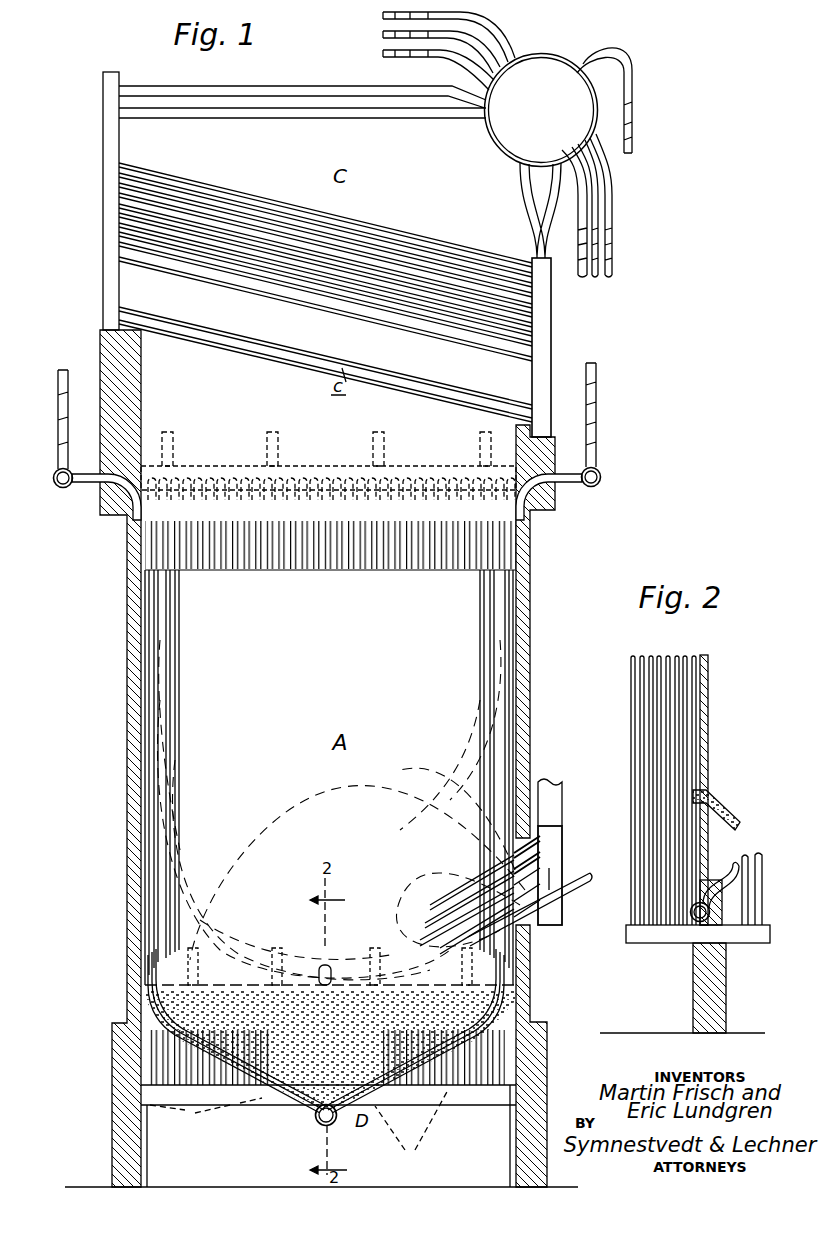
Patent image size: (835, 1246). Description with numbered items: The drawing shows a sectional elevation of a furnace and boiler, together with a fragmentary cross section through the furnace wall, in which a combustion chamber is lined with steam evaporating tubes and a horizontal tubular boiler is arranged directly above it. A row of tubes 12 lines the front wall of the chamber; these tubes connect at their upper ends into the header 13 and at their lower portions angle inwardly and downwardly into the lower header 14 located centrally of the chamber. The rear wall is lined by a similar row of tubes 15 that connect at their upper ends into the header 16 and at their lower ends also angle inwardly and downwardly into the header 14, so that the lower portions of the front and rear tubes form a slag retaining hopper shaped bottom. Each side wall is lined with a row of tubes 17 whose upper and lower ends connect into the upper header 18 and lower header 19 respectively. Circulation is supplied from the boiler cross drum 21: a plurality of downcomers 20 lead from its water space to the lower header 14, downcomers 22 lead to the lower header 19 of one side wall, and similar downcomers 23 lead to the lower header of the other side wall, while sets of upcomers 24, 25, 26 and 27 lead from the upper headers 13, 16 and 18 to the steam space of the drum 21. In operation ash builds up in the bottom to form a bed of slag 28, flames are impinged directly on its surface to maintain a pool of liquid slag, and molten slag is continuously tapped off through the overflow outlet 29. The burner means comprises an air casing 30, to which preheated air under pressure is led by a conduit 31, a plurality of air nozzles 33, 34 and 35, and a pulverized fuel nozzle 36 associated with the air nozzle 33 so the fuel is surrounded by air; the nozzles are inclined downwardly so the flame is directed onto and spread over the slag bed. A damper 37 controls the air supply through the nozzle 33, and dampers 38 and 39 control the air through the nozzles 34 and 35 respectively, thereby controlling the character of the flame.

In FIG. 1, the row of tubes 12 is at (518, 655).
In FIG. 1, the header 13 is at (601, 474).
In FIG. 1, the lower header 14 is at (318, 1121).
In FIG. 2, the lower header 14 is at (659, 950).
In FIG. 1, the row of tubes 15 is at (145, 660).
In FIG. 2, the row of tubes 15 is at (633, 750).
In FIG. 1, the header 16 is at (84, 495).
In FIG. 1, the row of tubes 17 is at (337, 572).
In FIG. 2, the row of tubes 17 is at (700, 775).
In FIG. 1, the upper header 18 is at (335, 470).
In FIG. 1, the lower header 19 is at (420, 1098).
In FIG. 2, the lower header 19 is at (708, 930).
In FIG. 1, the downcomers 20 is at (612, 216).
In FIG. 2, the downcomers 20 is at (768, 882).
In FIG. 1, the boiler cross drum 21 is at (553, 58).
In FIG. 1, the downcomers 22 is at (600, 208).
In FIG. 2, the downcomers 22 is at (723, 880).
In FIG. 1, the downcomers 23 is at (580, 219).
In FIG. 1, the upcomers 24 is at (635, 101).
In FIG. 1, the upcomers 25 is at (383, 53).
In FIG. 1, the upcomers 26 is at (383, 34).
In FIG. 1, the upcomers 27 is at (383, 15).
In FIG. 1, the bed of slag 28 is at (213, 1024).
In FIG. 1, the overflow outlet 29 is at (330, 970).
In FIG. 2, the overflow outlet 29 is at (716, 810).
In FIG. 1, the air casing 30 is at (563, 919).
In FIG. 1, the conduit 31 is at (556, 782).
In FIG. 1, the air nozzle 33 is at (520, 906).
In FIG. 1, the air nozzle 34 is at (520, 888).
In FIG. 1, the air nozzle 35 is at (520, 866).
In FIG. 1, the pulverized fuel nozzle 36 is at (520, 918).
In FIG. 1, the damper 37 is at (565, 879).
In FIG. 1, the damper 38 is at (548, 872).
In FIG. 1, the damper 39 is at (548, 848).